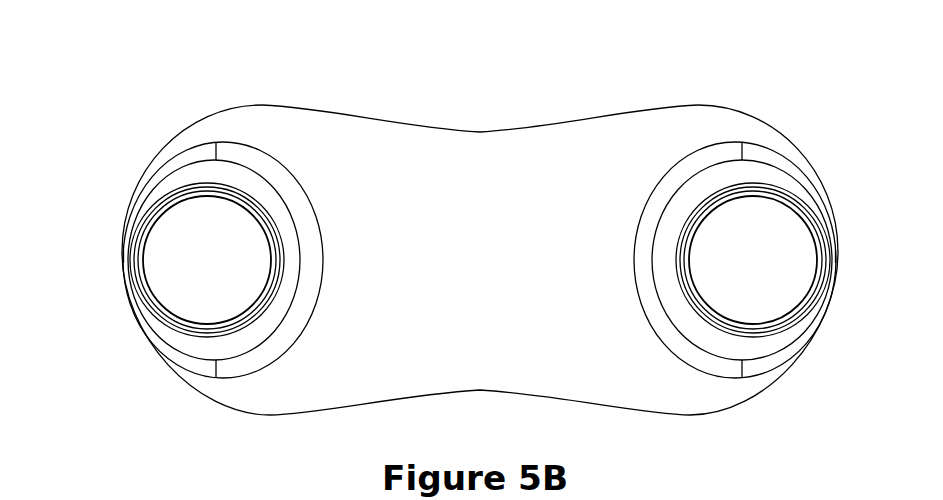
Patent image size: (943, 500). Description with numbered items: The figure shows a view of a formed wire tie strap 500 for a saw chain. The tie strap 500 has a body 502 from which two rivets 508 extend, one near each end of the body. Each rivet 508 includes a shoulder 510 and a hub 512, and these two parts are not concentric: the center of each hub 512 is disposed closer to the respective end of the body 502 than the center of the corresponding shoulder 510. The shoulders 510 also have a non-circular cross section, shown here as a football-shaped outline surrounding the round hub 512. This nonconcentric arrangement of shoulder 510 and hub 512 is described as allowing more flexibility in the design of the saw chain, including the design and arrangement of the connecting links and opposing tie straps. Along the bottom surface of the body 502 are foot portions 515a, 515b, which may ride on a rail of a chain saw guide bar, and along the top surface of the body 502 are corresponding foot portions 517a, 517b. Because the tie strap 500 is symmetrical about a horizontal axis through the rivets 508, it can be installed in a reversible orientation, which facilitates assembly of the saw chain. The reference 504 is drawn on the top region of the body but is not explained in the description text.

The formed wire tie strap 500 is at (140, 110).
The body 502 is at (352, 182).
The bridge portion 504 is at (473, 153).
The rivet 508 is at (742, 227).
The shoulder 510 is at (697, 183).
The hub 512 is at (760, 270).
The foot portion 515a is at (680, 413).
The foot portion 515b is at (270, 415).
The foot portion 517a is at (688, 105).
The foot portion 517b is at (262, 105).